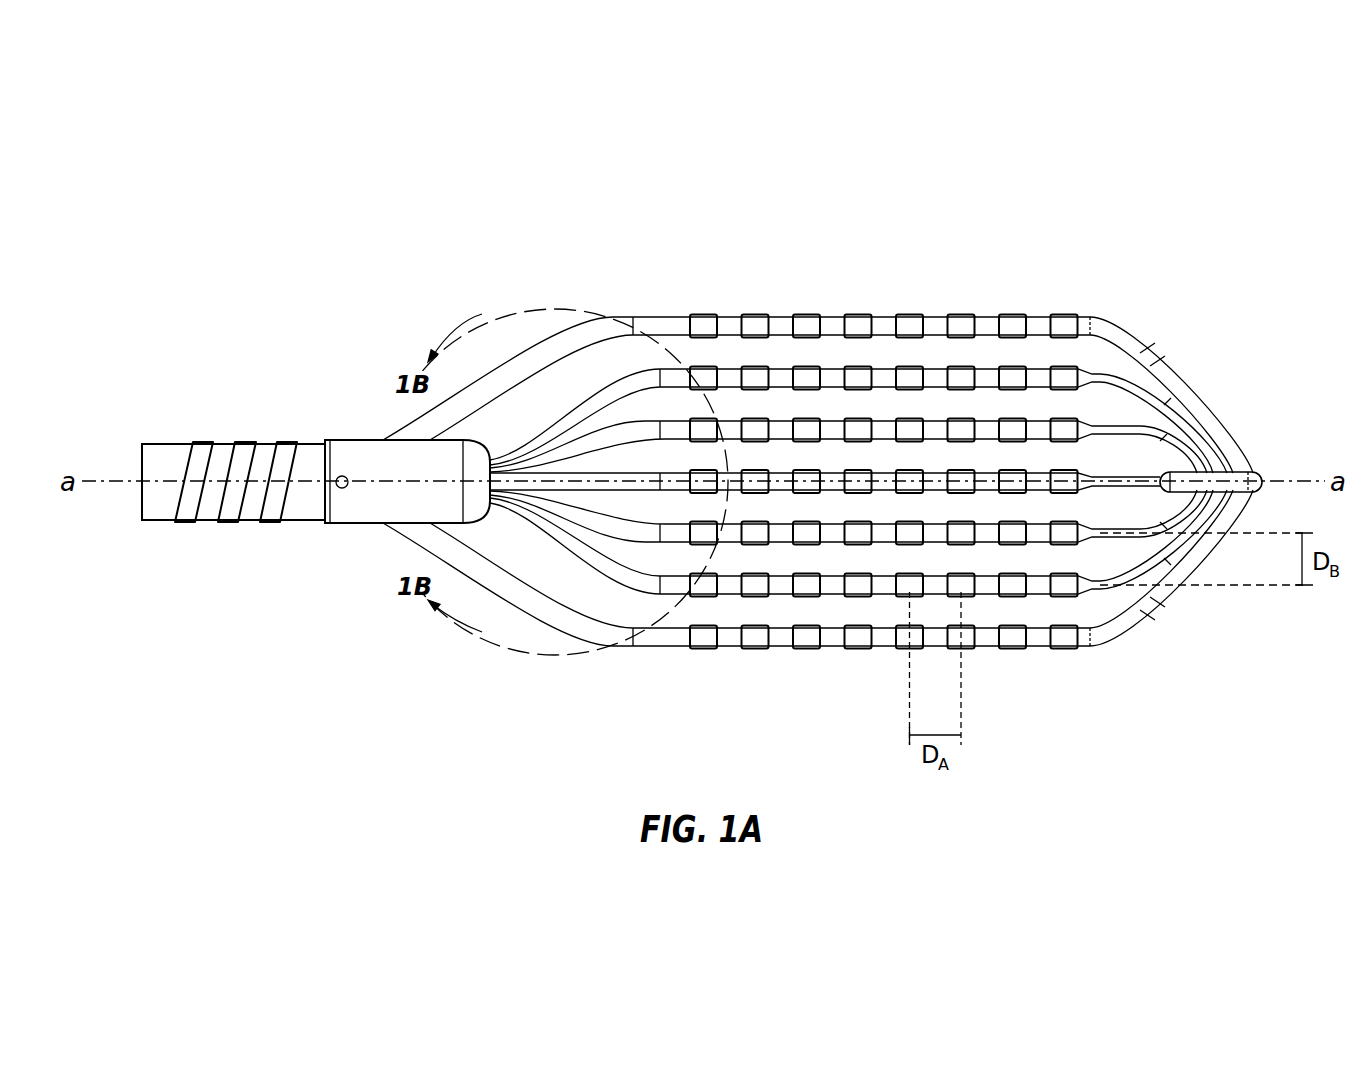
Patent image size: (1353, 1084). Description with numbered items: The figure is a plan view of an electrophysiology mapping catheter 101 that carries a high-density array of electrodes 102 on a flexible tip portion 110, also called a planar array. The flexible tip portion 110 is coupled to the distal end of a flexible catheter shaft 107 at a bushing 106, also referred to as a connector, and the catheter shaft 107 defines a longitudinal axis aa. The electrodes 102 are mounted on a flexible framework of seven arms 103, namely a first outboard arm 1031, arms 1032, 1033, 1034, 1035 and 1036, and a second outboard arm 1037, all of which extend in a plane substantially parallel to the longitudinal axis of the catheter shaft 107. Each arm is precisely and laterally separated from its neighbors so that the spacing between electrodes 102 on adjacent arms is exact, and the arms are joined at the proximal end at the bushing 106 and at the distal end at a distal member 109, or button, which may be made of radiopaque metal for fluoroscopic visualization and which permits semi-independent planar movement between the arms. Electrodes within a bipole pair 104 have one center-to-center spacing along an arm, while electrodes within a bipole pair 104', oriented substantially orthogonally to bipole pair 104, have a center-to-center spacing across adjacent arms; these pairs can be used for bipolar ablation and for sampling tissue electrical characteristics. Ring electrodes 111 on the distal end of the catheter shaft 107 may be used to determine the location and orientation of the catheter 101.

The electrophysiology mapping catheter 101 is at (430, 203).
The electrodes 102 is at (1063, 314).
The arms 103 is at (800, 492).
The first outboard arm 1031 is at (523, 350).
The arm 1032 is at (580, 387).
The arm 1033 is at (640, 427).
The arm 1034 is at (640, 497).
The arm 1035 is at (600, 537).
The arm 1036 is at (547, 557).
The second outboard arm 1037 is at (470, 577).
The bipole pair 104 is at (781, 657).
The bipole pair 104' is at (854, 631).
The bushing 106 is at (357, 440).
The catheter shaft 107 is at (158, 523).
The distal member 109 is at (1213, 473).
The flexible tip portion 110 is at (943, 288).
The ring electrodes 111 is at (205, 440).